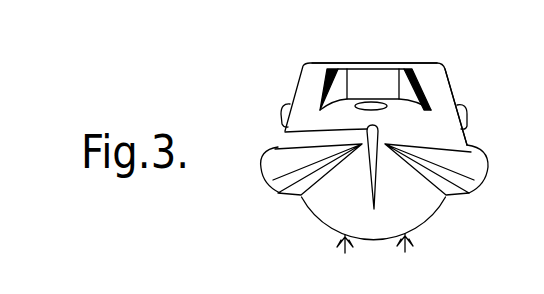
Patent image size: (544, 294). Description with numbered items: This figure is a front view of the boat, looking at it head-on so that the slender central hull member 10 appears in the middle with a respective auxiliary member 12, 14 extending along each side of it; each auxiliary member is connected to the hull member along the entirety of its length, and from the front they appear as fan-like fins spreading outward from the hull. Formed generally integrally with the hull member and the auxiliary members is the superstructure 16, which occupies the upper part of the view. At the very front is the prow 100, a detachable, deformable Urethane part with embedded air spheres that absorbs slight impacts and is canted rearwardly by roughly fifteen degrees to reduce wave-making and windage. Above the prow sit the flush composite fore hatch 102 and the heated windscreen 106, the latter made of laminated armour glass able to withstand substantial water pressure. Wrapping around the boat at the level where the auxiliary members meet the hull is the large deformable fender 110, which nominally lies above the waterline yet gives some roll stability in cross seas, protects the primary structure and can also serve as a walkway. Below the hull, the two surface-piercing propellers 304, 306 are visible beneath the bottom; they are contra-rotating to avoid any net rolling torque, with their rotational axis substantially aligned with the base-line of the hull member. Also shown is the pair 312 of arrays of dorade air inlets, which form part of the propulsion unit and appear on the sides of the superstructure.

The central hull member 10 is at (374, 210).
The auxiliary member 12 is at (281, 196).
The auxiliary member 14 is at (447, 199).
The superstructure 16 is at (417, 132).
The prow 100 is at (285, 132).
The flush composite fore hatch 102 is at (383, 103).
The heated windscreen 106 is at (417, 63).
The deformable fender 110 is at (261, 168).
The surface-piercing propeller 304 is at (337, 249).
The surface-piercing propeller 306 is at (417, 250).
The pair of arrays of dorade air inlets 312 is at (284, 112).